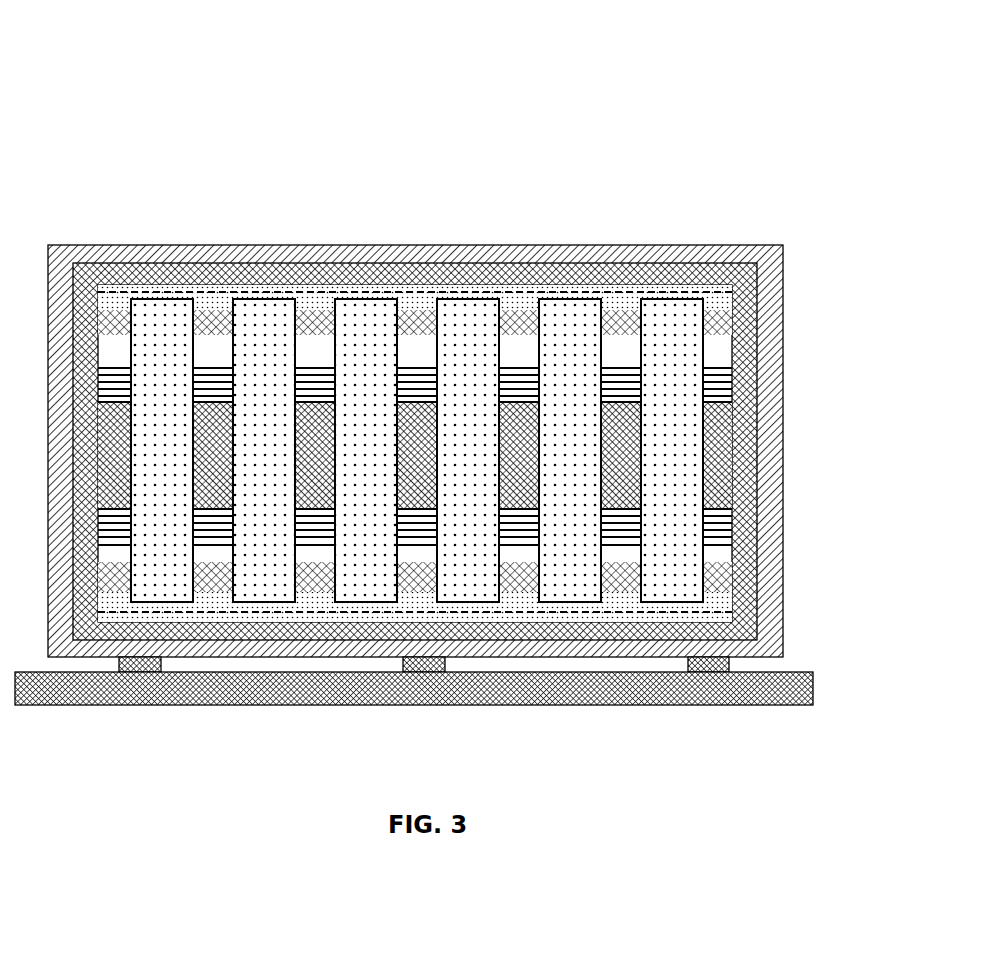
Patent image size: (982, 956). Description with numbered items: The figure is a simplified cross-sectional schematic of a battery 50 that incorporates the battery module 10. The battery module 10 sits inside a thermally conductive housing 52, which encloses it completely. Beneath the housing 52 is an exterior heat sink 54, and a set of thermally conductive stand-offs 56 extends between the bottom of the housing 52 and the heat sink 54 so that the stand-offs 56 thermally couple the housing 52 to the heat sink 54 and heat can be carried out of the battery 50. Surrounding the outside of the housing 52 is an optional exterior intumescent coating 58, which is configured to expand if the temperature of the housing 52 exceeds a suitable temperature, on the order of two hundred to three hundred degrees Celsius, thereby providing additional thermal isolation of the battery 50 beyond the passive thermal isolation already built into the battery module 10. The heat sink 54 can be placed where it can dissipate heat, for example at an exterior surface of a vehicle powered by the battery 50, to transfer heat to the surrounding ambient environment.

The battery 50 is at (481, 402).
The battery module 10 is at (274, 300).
The thermally conductive housing 52 is at (357, 280).
The exterior intumescent coating 58 is at (468, 260).
The exterior heat sink 54 is at (813, 672).
The thermally conductive stand-offs 56 is at (140, 657).